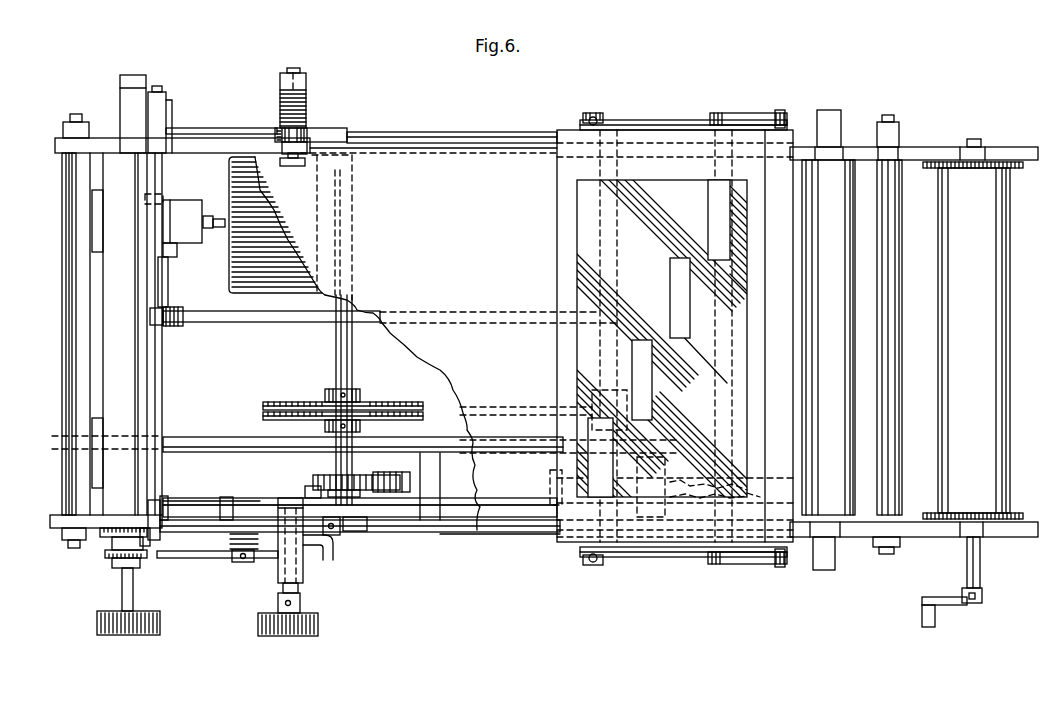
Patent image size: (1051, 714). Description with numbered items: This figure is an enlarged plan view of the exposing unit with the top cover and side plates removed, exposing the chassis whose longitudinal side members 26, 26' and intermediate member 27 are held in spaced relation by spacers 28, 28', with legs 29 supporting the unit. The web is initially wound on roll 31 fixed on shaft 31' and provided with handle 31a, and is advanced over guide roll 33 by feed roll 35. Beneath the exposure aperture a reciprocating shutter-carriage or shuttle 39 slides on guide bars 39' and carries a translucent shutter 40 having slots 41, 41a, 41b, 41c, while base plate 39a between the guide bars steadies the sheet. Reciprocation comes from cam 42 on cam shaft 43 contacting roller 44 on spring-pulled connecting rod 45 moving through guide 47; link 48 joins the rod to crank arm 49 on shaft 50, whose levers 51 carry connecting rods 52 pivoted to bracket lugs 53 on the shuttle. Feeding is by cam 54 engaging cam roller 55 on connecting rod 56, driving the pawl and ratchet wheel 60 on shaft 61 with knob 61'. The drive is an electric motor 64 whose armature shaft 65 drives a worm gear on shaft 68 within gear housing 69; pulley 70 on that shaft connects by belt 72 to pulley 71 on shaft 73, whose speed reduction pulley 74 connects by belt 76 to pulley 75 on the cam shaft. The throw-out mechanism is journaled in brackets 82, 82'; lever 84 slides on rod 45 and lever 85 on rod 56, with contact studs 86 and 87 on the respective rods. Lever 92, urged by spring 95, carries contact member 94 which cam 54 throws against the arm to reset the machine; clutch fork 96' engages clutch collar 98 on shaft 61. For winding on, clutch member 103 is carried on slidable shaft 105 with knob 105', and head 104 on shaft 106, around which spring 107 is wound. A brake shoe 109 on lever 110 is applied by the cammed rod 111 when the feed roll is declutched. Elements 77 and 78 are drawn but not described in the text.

The legs 29 is at (131, 78).
The rod 111 is at (160, 94).
The lever 110 is at (182, 129).
The spring 107 is at (306, 104).
The brake shoe 109 is at (277, 133).
The guide bars 39' is at (452, 122).
The bracket lugs 53 is at (591, 114).
The connecting rods 52 is at (648, 120).
The levers 51 is at (740, 113).
The longitudinal side member 26' is at (914, 134).
The shaft 31' is at (986, 125).
The clutch member 104 is at (305, 168).
The shaft 106 is at (293, 168).
The gear housing 69 is at (178, 202).
The electric motor 64 is at (277, 226).
The armature shaft 65 is at (208, 232).
The shaft 68 is at (172, 280).
The bracket 77 is at (92, 230).
The shaft 78 is at (75, 293).
The spacer 28' is at (47, 334).
The feed roll 35 is at (120, 360).
The pulley 70 is at (172, 327).
The belt 72 is at (235, 321).
The cam shaft 43 is at (336, 340).
The base plate 39a is at (425, 240).
The shutter-carriage or shuttle 39 is at (651, 336).
The translucent shutter 40 is at (577, 243).
The shaft 73 is at (612, 235).
The pulley 71 is at (548, 311).
The slot 41c is at (708, 205).
The slot 41b is at (680, 258).
The slot 41a is at (652, 365).
The speed reduction pulley 74 is at (575, 396).
The shaft 50 is at (715, 385).
The guide 47 is at (668, 475).
The slot 41 is at (613, 467).
The contact pin or stud 86 is at (598, 497).
The link 48 is at (700, 493).
The crank arm 49 is at (740, 495).
The belt 76 is at (440, 373).
The pulley 75 is at (385, 402).
The cam 42 is at (355, 475).
The roller 44 is at (395, 475).
The intermediate member 27 is at (200, 437).
The contact pin or stud 87 is at (208, 497).
The lever 85 is at (228, 498).
The clutch member 103 is at (285, 498).
The cam roller 55 is at (312, 487).
The connecting rod 56 is at (190, 498).
The bracket 82' is at (270, 527).
The contact member 94 is at (355, 540).
The cam 54 is at (368, 530).
The connecting rod 45 is at (440, 532).
The lever 84 is at (470, 533).
The spacer 28 is at (904, 337).
The roll 31 is at (964, 340).
The guide roll 33 is at (810, 417).
The ratchet wheel 60 is at (105, 535).
The clutch collar 98 is at (110, 560).
The shaft 61 is at (93, 590).
The knob 61' is at (105, 628).
The clutch fork 96' is at (161, 569).
The lever 92 is at (200, 558).
The spring 95 is at (235, 561).
The bracket 82 is at (312, 583).
The slidable shaft 105 is at (322, 607).
The knob 105' is at (296, 639).
The longitudinal side member 26 is at (914, 551).
The handle 31a is at (950, 606).